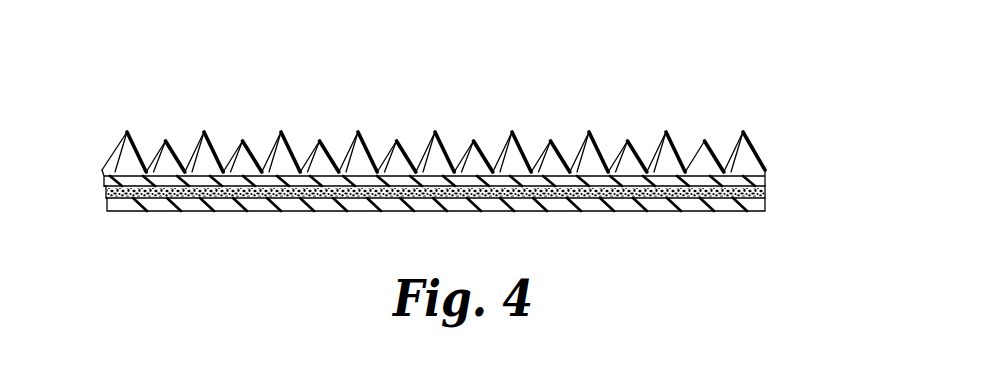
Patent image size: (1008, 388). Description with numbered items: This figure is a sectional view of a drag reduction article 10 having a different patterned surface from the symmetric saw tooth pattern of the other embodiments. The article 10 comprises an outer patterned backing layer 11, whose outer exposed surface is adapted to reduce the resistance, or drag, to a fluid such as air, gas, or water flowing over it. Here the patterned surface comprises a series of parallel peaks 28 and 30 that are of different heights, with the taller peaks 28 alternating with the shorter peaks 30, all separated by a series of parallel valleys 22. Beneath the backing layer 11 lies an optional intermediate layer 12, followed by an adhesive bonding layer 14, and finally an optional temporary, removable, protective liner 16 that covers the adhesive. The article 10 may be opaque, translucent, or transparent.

The drag reduction article 10 is at (795, 62).
The outer patterned backing layer 11 is at (752, 160).
The intermediate layer 12 is at (766, 180).
The adhesive bonding layer 14 is at (102, 192).
The protective liner 16 is at (546, 212).
The valleys 22 is at (610, 165).
The peaks 28 is at (282, 131).
The peaks 30 is at (397, 139).